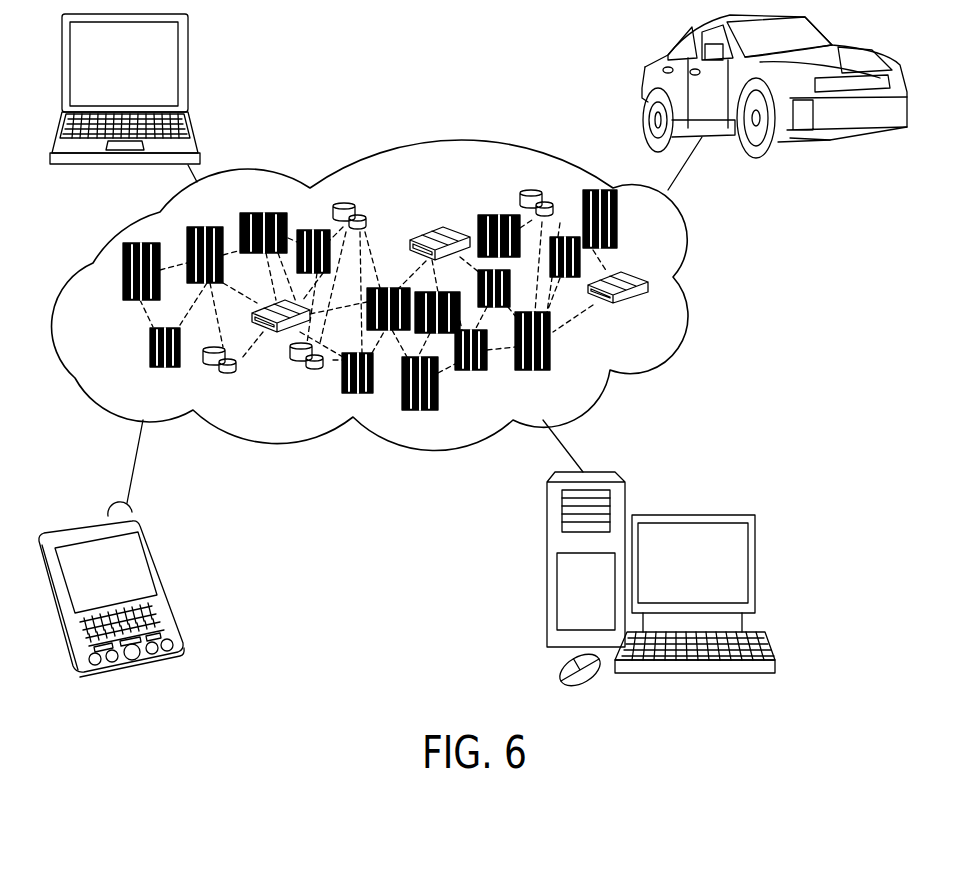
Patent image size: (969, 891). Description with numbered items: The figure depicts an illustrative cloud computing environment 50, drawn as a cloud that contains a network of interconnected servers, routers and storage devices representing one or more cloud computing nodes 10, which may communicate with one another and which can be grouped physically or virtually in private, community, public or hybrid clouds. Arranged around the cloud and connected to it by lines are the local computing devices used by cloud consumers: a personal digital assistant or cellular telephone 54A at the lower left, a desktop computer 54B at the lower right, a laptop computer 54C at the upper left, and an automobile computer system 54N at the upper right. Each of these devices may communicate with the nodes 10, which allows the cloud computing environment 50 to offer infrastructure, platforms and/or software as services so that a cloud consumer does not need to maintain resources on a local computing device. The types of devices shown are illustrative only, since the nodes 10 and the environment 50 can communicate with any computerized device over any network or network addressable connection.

The cloud computing node 10 is at (662, 323).
The cloud computing environment 50 is at (411, 295).
The personal digital assistant or cellular telephone 54A is at (158, 563).
The desktop computer 54B is at (755, 563).
The laptop computer 54C is at (187, 68).
The automobile computer system 54N is at (823, 33).